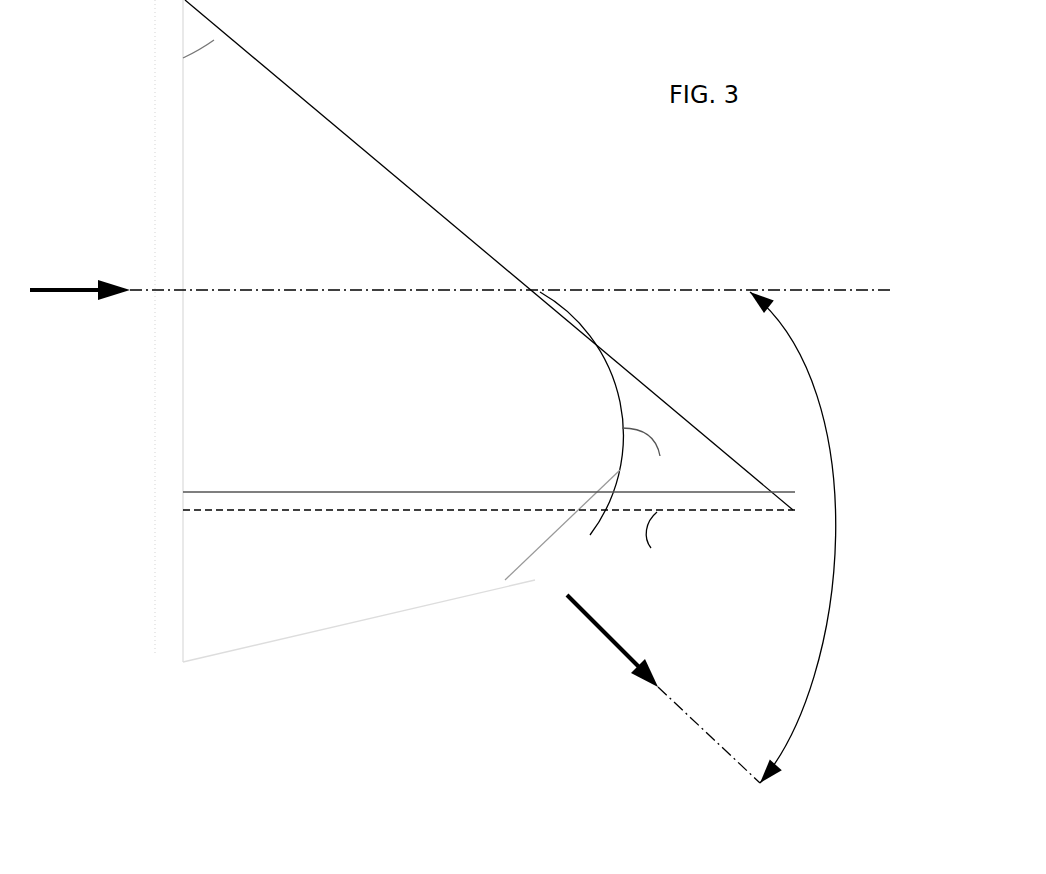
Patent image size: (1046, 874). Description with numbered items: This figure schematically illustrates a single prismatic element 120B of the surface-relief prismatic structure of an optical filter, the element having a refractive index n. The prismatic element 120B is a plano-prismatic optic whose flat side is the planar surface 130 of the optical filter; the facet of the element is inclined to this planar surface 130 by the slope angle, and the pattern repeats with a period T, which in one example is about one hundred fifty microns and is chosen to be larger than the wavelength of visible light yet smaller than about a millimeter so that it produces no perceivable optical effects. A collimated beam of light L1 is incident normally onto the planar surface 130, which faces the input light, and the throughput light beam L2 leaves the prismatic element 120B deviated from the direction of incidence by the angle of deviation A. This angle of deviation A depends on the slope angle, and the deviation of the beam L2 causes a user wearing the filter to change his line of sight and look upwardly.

The planar surface 130 is at (179, 464).
The prismatic element 120B is at (489, 286).
The collimated beam of light L1 is at (460, 267).
The throughput light beam L2 is at (663, 689).
The angle of deviation A is at (815, 537).
The period T is at (133, 327).